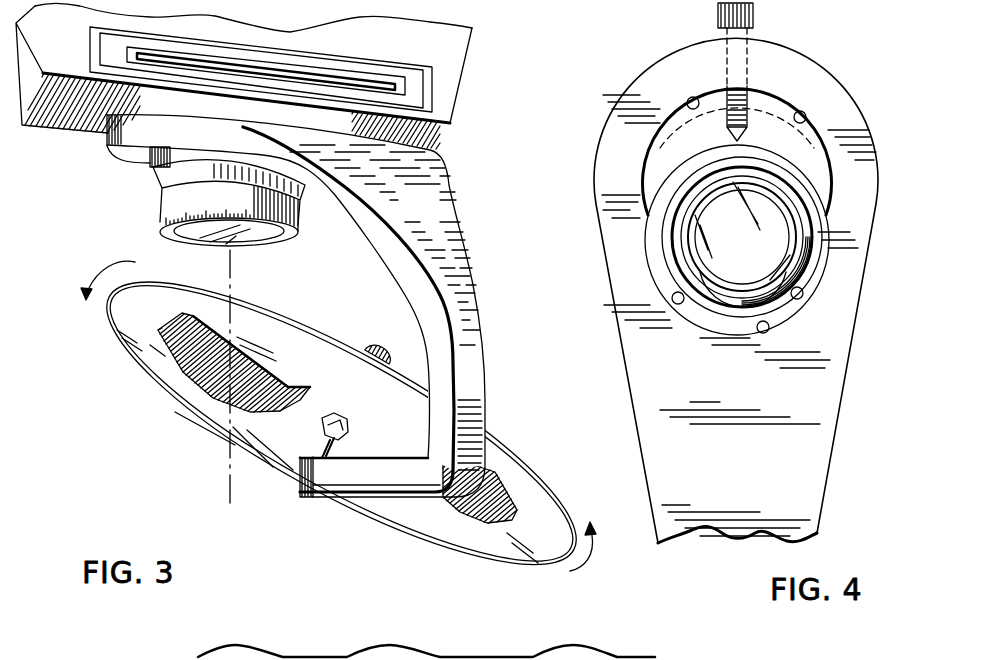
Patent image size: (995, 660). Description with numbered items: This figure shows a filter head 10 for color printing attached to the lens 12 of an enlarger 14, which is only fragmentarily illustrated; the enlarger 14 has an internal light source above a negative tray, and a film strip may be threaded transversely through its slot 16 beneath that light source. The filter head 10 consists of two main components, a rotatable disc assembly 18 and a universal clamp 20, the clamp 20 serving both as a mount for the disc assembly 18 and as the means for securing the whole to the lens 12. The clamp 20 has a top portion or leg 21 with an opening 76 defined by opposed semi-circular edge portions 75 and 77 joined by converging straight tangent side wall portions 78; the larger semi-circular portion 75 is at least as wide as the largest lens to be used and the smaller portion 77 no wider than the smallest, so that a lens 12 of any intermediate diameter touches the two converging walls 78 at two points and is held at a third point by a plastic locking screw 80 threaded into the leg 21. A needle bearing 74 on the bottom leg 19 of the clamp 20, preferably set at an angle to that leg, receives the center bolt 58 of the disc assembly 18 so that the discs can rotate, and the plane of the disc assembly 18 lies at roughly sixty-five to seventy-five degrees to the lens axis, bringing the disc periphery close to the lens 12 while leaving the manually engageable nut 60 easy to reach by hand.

In FIG. 3, the filter head 10 is at (492, 300).
In FIG. 3, the lens 12 is at (158, 186).
In FIG. 4, the lens 12 is at (765, 247).
In FIG. 3, the enlarger 14 is at (472, 108).
In FIG. 3, the slot 16 is at (396, 81).
In FIG. 3, the disc assembly 18 is at (523, 568).
In FIG. 3, the bottom leg 19 is at (357, 478).
In FIG. 3, the universal clamp 20 is at (428, 217).
In FIG. 4, the universal clamp 20 is at (850, 423).
In FIG. 3, the top portion or leg 21 is at (105, 135).
In FIG. 4, the top portion or leg 21 is at (767, 470).
In FIG. 3, the center bolt 58 is at (348, 418).
In FIG. 3, the manually engageable nut 60 is at (377, 343).
In FIG. 3, the needle bearing 74 is at (315, 442).
In FIG. 4, the semi-circular edge portion 75 is at (688, 99).
In FIG. 4, the opening 76 is at (805, 113).
In FIG. 4, the semi-circular edge portion 77 is at (778, 344).
In FIG. 4, the converging straight tangent side wall portions 78 is at (676, 305).
In FIG. 4, the locking screw 80 is at (754, 11).